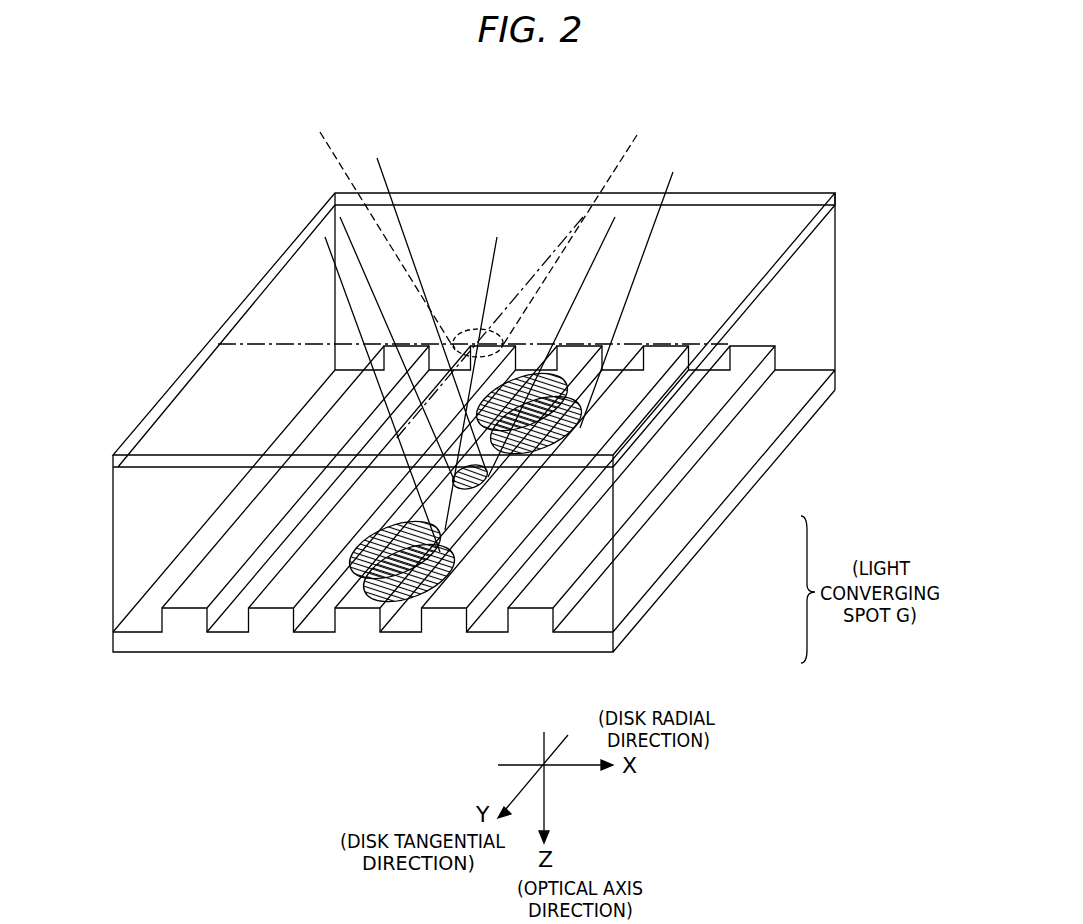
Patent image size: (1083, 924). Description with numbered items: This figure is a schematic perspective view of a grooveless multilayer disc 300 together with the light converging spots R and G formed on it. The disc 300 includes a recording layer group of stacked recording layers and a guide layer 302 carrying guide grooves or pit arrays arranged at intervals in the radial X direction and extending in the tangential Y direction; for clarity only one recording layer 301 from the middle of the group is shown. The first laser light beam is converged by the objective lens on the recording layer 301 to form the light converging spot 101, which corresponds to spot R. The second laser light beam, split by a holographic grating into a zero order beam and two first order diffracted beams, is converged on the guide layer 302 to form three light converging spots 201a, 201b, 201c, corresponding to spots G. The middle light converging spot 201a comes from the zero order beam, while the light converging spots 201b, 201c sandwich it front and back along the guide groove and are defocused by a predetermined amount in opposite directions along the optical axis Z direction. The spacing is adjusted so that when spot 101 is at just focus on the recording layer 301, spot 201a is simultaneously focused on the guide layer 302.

The light converging spot 101 is at (471, 333).
The grooveless multilayer disc 300 is at (823, 264).
The recording layer 301 is at (750, 216).
The guide layer 302 is at (264, 634).
The middle light converging spot 201a is at (488, 480).
The light converging spot 201b is at (530, 410).
The light converging spot 201c is at (447, 550).